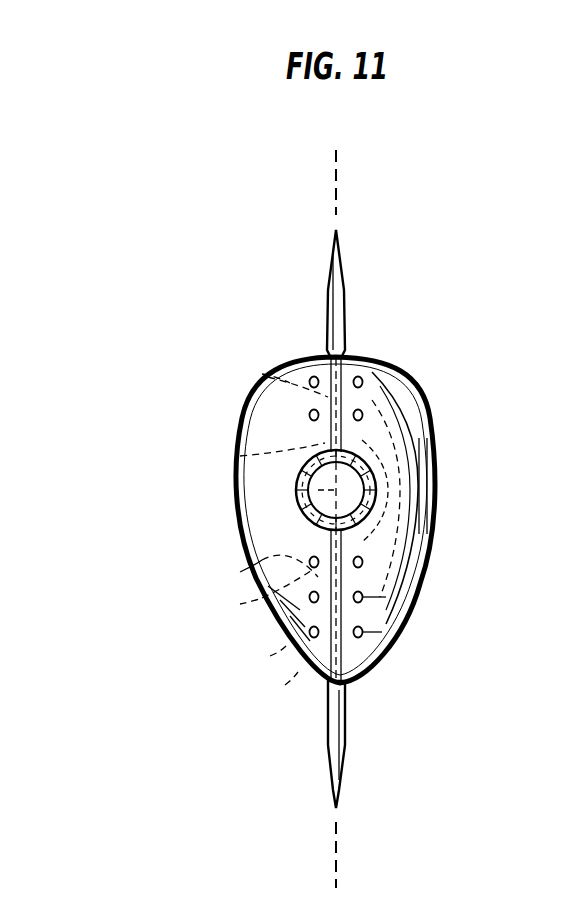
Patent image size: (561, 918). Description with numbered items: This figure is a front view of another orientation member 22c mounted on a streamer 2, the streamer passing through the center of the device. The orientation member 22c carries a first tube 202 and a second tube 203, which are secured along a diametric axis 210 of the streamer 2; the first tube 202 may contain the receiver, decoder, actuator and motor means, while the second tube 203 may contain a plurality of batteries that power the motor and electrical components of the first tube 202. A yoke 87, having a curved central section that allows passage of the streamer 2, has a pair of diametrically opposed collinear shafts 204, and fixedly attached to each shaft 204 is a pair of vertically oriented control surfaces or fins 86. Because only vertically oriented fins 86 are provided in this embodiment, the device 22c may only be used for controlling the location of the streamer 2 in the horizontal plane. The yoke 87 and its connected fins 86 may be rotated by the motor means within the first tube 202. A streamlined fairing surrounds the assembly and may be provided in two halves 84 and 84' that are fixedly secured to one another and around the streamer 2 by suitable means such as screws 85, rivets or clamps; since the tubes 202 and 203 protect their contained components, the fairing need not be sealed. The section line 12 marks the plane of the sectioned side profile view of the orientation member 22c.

The streamer 2 is at (374, 465).
The section line 12 is at (336, 146).
The orientation member 22c is at (466, 292).
The fairing half 84 is at (367, 520).
The fairing half 84' is at (215, 574).
The screws 85 is at (363, 415).
The fins 86 is at (345, 292).
The yoke 87 is at (240, 456).
The first tube 202 is at (240, 604).
The second tube 203 is at (270, 656).
The shafts 204 is at (262, 374).
The diametric axis 210 is at (298, 493).